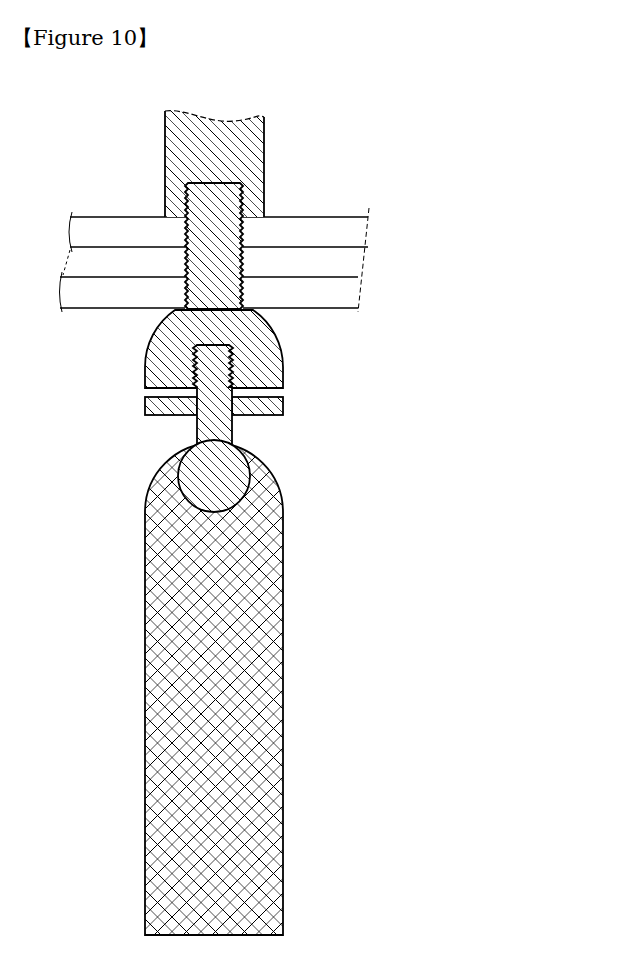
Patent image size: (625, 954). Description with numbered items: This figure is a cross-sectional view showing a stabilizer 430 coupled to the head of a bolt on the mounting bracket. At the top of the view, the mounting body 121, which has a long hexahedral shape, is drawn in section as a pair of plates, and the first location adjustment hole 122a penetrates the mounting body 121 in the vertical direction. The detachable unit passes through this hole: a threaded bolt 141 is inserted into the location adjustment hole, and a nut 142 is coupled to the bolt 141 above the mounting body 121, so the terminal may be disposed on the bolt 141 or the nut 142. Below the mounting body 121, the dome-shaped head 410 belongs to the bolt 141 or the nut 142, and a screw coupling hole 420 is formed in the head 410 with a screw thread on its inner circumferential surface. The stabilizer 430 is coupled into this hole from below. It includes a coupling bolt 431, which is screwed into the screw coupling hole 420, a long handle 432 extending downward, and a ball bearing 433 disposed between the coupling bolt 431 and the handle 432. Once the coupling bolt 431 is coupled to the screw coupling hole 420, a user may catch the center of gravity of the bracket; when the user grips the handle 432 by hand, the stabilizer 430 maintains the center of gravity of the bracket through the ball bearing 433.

The mounting body 121 is at (355, 228).
The first location adjustment hole 122a is at (340, 264).
The bolt 141 is at (183, 232).
The nut 142 is at (265, 139).
The head 410 is at (235, 366).
The screw coupling hole 420 is at (200, 372).
The stabilizer 430 is at (312, 522).
The coupling bolt 431 is at (270, 388).
The handle 432 is at (268, 681).
The ball bearing 433 is at (232, 488).